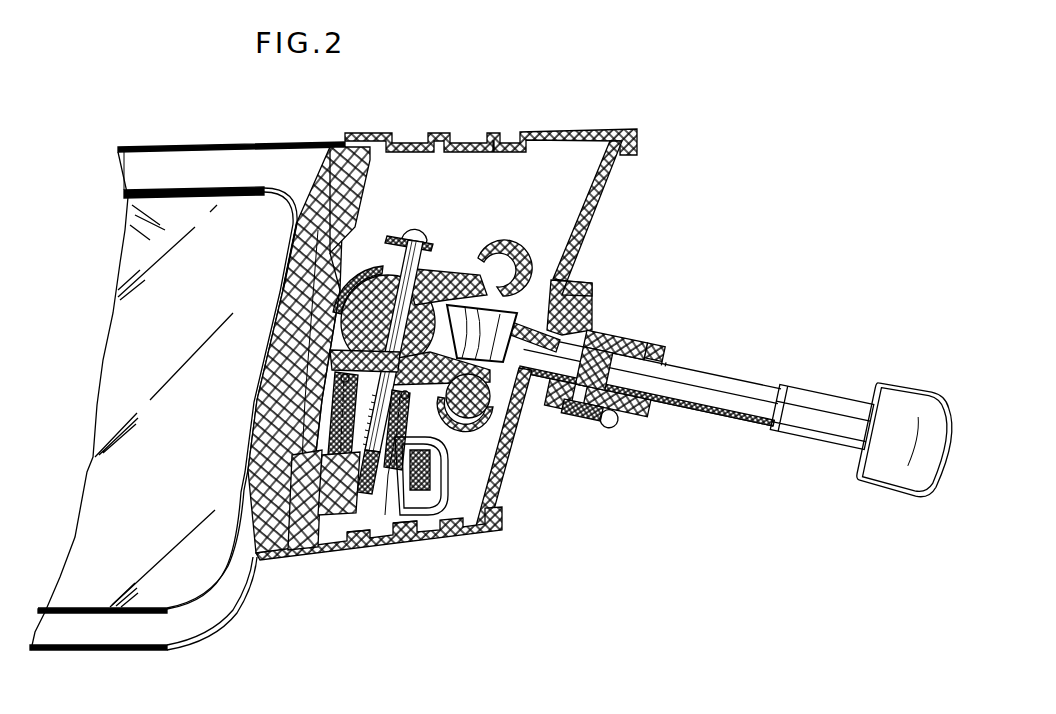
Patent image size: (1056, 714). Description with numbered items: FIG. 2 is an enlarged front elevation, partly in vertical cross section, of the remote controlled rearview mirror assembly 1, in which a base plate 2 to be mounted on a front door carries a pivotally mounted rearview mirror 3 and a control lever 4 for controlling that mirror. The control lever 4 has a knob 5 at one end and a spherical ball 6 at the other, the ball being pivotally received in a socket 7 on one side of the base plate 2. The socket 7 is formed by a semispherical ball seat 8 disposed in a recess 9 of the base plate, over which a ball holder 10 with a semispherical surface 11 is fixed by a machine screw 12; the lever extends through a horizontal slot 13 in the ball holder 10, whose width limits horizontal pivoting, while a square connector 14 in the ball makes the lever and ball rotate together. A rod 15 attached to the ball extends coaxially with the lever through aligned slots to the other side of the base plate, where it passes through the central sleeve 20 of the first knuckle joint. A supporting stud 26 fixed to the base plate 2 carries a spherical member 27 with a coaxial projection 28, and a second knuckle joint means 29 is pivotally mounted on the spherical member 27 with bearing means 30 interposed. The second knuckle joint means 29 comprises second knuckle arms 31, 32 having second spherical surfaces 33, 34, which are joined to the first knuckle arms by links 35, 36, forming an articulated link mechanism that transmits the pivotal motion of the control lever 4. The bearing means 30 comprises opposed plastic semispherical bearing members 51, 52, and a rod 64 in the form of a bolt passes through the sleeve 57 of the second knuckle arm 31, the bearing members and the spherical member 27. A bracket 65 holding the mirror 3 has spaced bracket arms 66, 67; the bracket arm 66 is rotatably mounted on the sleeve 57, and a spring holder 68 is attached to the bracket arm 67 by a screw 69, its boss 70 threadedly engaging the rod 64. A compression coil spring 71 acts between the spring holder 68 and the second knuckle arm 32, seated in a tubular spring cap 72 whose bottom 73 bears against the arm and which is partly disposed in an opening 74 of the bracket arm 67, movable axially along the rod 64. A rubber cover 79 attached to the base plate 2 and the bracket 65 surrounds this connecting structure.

The remote controlled rearview mirror assembly 1 is at (568, 110).
The base plate 2 is at (613, 178).
The rearview mirror 3 is at (105, 392).
The control lever 4 is at (720, 380).
The knob 5 is at (913, 386).
The spherical ball 6 is at (597, 325).
The socket 7 is at (590, 305).
The semispherical ball seat 8 is at (572, 300).
The recess 9 is at (556, 420).
The ball holder 10 is at (615, 398).
The semispherical surface 11 is at (580, 395).
The machine screw 12 is at (570, 432).
The horizontal slot 13 is at (640, 350).
The square connector 14 is at (622, 338).
The rod 15 is at (538, 328).
The central sleeve 20 is at (490, 390).
The supporting stud 26 is at (522, 296).
The spherical member 27 is at (330, 265).
The coaxial projection 28 is at (335, 275).
The second knuckle joint means 29 is at (340, 240).
The bearing means 30 is at (318, 300).
The second knuckle arm 31 is at (372, 250).
The second knuckle arm 32 is at (310, 330).
The second spherical surface 33 is at (508, 270).
The second spherical surface 34 is at (505, 440).
The link 35 is at (512, 252).
The link 36 is at (466, 433).
The semispherical bearing member 51 is at (440, 285).
The semispherical bearing member 52 is at (330, 355).
The sleeve 57 is at (392, 245).
The rod 64 is at (415, 232).
The bracket 65 is at (181, 158).
The bracket arm 66 is at (436, 255).
The bracket arm 67 is at (442, 478).
The spring holder 68 is at (305, 512).
The screw 69 is at (405, 535).
The boss 70 is at (330, 420).
The compression coil spring 71 is at (350, 545).
The tubular spring cap 72 is at (335, 400).
The bottom 73 is at (345, 372).
The opening 74 is at (395, 528).
The cover 79 is at (478, 137).